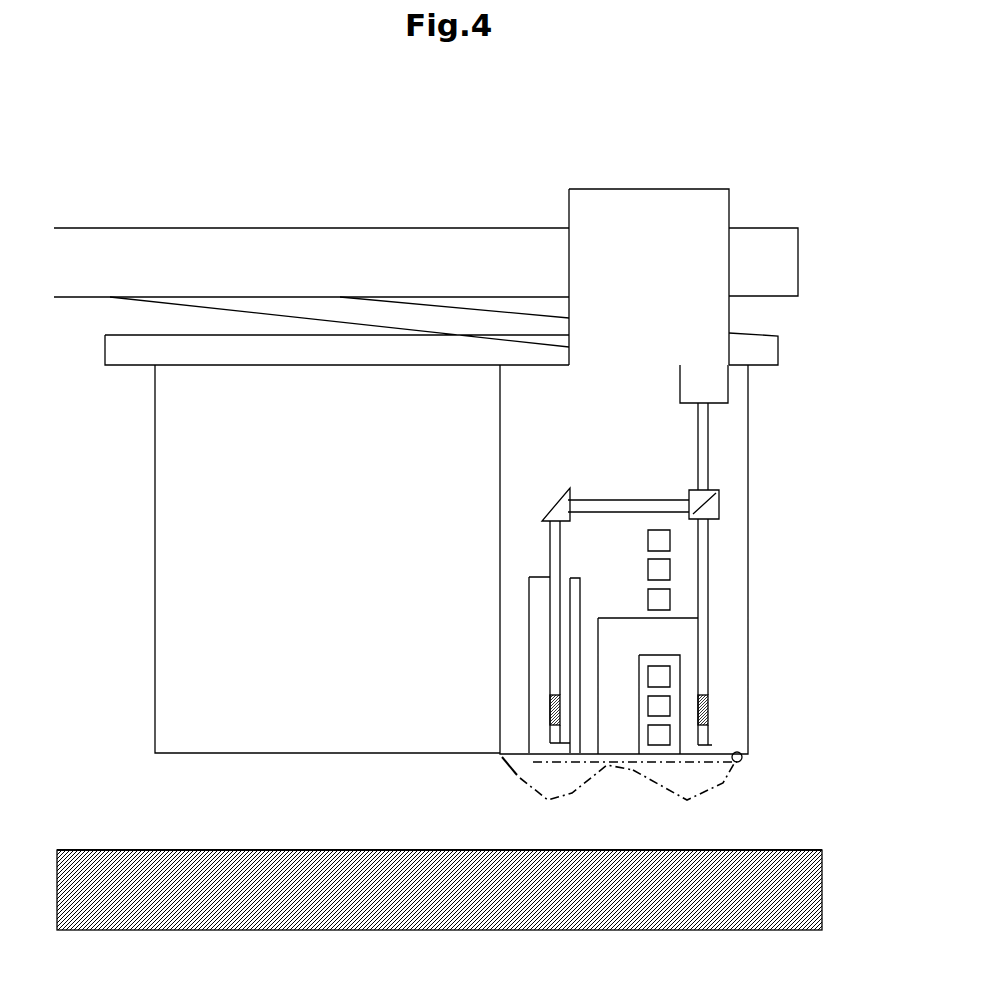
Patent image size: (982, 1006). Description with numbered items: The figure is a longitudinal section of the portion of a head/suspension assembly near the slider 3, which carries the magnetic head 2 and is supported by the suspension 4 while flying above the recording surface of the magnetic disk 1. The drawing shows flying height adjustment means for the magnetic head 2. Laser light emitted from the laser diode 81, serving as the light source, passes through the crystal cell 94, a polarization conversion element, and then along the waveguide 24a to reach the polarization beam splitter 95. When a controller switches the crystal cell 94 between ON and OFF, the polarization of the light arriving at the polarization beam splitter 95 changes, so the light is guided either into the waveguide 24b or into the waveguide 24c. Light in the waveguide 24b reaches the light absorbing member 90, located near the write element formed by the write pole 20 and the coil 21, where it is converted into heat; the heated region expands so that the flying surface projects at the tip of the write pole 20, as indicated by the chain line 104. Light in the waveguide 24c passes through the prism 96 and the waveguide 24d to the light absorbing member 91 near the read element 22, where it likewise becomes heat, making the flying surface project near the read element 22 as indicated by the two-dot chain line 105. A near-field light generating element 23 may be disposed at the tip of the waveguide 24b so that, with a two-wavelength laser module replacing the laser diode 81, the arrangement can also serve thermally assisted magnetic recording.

The magnetic disk 1 is at (243, 872).
The magnetic head 2 is at (615, 395).
The slider 3 is at (172, 705).
The suspension 4 is at (177, 238).
The write pole 20 is at (688, 668).
The coil 21 is at (663, 600).
The read element 22 is at (532, 762).
The near-field light generating element 23 is at (742, 760).
The waveguide 24a is at (707, 452).
The waveguide 24b is at (705, 566).
The waveguide 24c is at (607, 503).
The waveguide 24d is at (553, 570).
The laser diode 81 is at (630, 207).
The light absorbing member 90 is at (710, 707).
The light absorbing member 91 is at (550, 707).
The crystal cell 94 is at (722, 383).
The polarization beam splitter 95 is at (717, 507).
The prism 96 is at (545, 517).
The chain line 104 is at (713, 792).
The two-dot chain line 105 is at (604, 777).